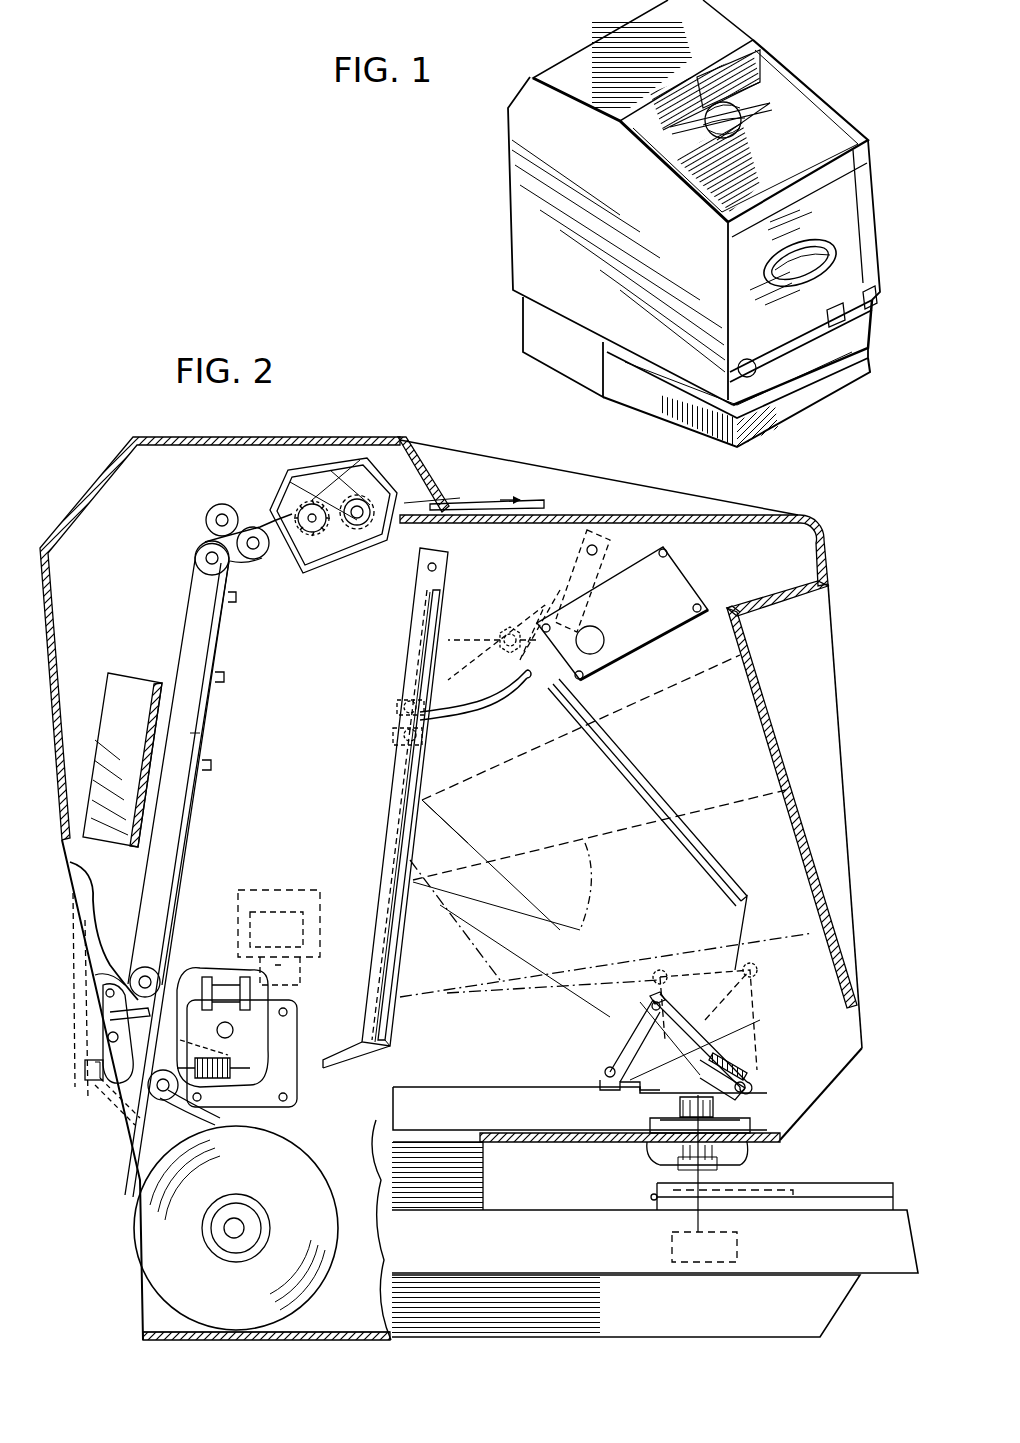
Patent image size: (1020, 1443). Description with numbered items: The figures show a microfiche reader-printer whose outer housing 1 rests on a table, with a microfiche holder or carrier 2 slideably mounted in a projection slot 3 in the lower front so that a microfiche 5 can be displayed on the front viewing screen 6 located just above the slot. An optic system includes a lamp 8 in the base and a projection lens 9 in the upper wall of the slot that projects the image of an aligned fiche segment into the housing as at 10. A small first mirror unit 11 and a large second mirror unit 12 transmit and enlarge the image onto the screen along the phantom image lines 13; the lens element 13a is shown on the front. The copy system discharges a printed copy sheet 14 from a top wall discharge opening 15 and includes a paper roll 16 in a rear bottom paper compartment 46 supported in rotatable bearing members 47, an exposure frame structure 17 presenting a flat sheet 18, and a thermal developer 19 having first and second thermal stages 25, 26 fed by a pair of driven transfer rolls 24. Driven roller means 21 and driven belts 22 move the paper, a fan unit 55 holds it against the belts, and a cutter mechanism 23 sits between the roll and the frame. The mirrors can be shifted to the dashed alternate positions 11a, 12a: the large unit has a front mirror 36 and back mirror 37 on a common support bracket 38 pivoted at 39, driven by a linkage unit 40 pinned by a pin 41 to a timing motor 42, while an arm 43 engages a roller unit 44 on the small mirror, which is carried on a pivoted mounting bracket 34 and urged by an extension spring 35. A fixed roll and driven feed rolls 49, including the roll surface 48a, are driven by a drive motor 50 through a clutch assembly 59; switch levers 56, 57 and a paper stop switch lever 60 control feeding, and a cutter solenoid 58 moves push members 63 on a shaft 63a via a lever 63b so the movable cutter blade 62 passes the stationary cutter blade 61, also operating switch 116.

In FIG. 1, the outer housing 1 is at (512, 268).
In FIG. 2, the outer housing 1 is at (440, 440).
In FIG. 1, the microfiche holder or carrier 2 is at (840, 350).
In FIG. 2, the microfiche holder or carrier 2 is at (895, 1196).
In FIG. 1, the projection opening or slot 3 is at (870, 306).
In FIG. 2, the projection opening or slot 3 is at (785, 1160).
In FIG. 2, the microfiche 5 is at (782, 1200).
In FIG. 1, the front viewing screen 6 is at (855, 262).
In FIG. 2, the front viewing screen 6 is at (830, 888).
In FIG. 2, the lamp 8 is at (668, 1250).
In FIG. 2, the projection lens 9 is at (720, 1166).
In FIG. 2, the projected image 10 is at (680, 1162).
In FIG. 2, the first mirror unit 11 is at (640, 1022).
In FIG. 2, the alternate position of small mirror unit 11a is at (760, 1005).
In FIG. 2, the second mirror unit 12 is at (420, 838).
In FIG. 2, the alternate position of large mirror unit 12a is at (664, 777).
In FIG. 1, the phantom projection image lines 13 is at (828, 232).
In FIG. 2, the phantom projection image lines 13 is at (578, 868).
In FIG. 1, the lens 13a is at (730, 132).
In FIG. 1, the printed copy sheet 14 is at (757, 107).
In FIG. 2, the printed copy sheet 14 is at (496, 505).
In FIG. 1, the top wall discharge opening 15 is at (762, 84).
In FIG. 2, the top wall discharge opening 15 is at (452, 500).
In FIG. 2, the paper roll 16 is at (308, 1165).
In FIG. 2, the exposure frame structure 17 is at (210, 733).
In FIG. 2, the copy paper sheet 18 is at (185, 863).
In FIG. 2, the thermal developer structure 19 is at (345, 575).
In FIG. 2, the driven roller means 21 is at (133, 1098).
In FIG. 2, the driven belts 22 is at (185, 615).
In FIG. 2, the cutter mechanism 23 is at (110, 975).
In FIG. 2, the driven transfer rolls 24 is at (208, 520).
In FIG. 2, the first thermal stage 25 is at (310, 500).
In FIG. 2, the second thermal stage 26 is at (366, 535).
In FIG. 2, the pivoted mounting bracket 34 is at (744, 1090).
In FIG. 2, the extension spring 35 is at (740, 1062).
In FIG. 2, the front mirror 36 is at (395, 958).
In FIG. 2, the back mirror 37 is at (378, 975).
In FIG. 2, the common support bracket 38 is at (385, 822).
In FIG. 2, the pivot 39 is at (436, 567).
In FIG. 2, the linkage unit 40 is at (508, 625).
In FIG. 2, the pin 41 is at (398, 714).
In FIG. 2, the timing motor 42 is at (680, 583).
In FIG. 2, the arm 43 is at (390, 1046).
In FIG. 2, the roller unit 44 is at (650, 1010).
In FIG. 2, the rear bottom paper compartment 46 is at (338, 1328).
In FIG. 2, the rotatable bearing members 47 is at (245, 1232).
In FIG. 2, the film strip 48a is at (200, 1122).
In FIG. 2, the power driven cutter feed rolls 49 is at (105, 1100).
In FIG. 2, the drive motor 50 is at (298, 1040).
In FIG. 2, the fan unit 55 is at (135, 688).
In FIG. 2, the 8-inch cut switch lever 56 is at (211, 766).
In FIG. 2, the 11-inch cut switch lever 57 is at (224, 678).
In FIG. 2, the cutter solenoid 58 is at (228, 970).
In FIG. 2, the solenoid-operated clutch assembly 59 is at (285, 893).
In FIG. 2, the paper stop switch lever 60 is at (236, 600).
In FIG. 2, the stationary cutter blade 61 is at (215, 1040).
In FIG. 2, the movable cutter blade 62 is at (110, 1016).
In FIG. 2, the push members 63 is at (100, 995).
In FIG. 2, the shaft 63a is at (108, 1040).
In FIG. 2, the lever 63b is at (100, 975).
In FIG. 2, the switch 116 is at (90, 1075).